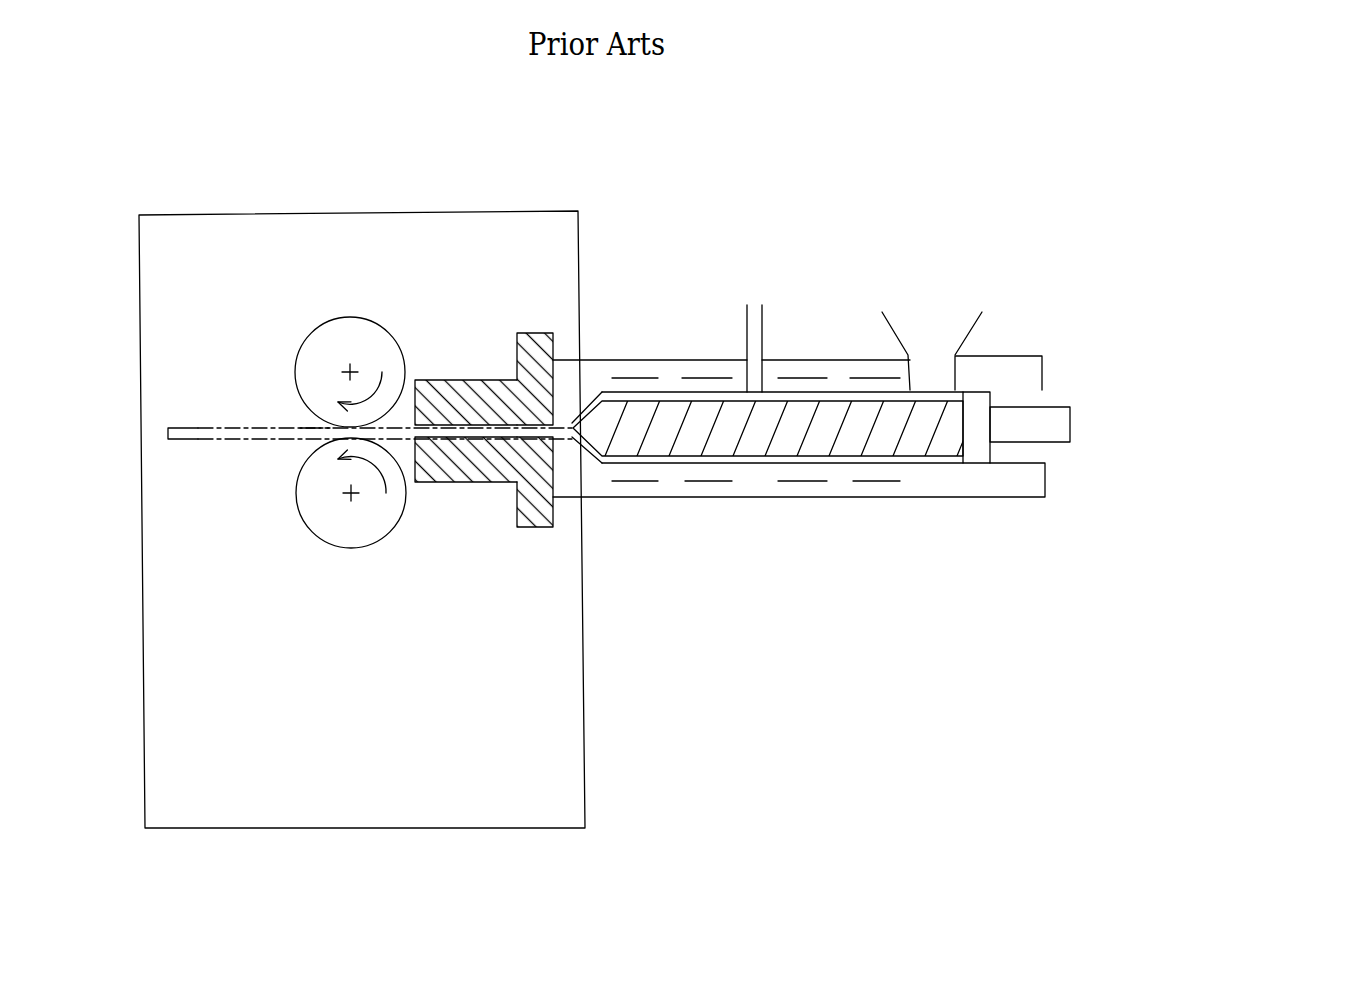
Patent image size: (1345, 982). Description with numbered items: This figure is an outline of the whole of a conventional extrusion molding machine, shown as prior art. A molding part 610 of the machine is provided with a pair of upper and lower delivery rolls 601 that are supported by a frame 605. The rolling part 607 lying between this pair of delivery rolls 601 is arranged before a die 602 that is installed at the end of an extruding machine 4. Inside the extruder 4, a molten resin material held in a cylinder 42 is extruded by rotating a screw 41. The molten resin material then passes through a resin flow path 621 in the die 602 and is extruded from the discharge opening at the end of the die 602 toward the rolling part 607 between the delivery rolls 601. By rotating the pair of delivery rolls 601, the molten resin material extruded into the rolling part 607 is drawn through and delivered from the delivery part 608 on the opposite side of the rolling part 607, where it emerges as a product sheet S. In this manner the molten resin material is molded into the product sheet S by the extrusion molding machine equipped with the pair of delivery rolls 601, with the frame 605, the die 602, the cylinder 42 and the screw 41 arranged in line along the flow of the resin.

The frame 605 is at (358, 213).
The delivery rolls 601 is at (322, 345).
The delivery part 608 is at (310, 418).
The product sheet S is at (232, 438).
The molding part 610 is at (418, 333).
The resin flow path 621 is at (448, 435).
The rolling part 607 is at (385, 442).
The die 602 is at (533, 345).
The cylinder 42 is at (675, 497).
The screw 41 is at (750, 433).
The extruding machine 4 is at (998, 356).